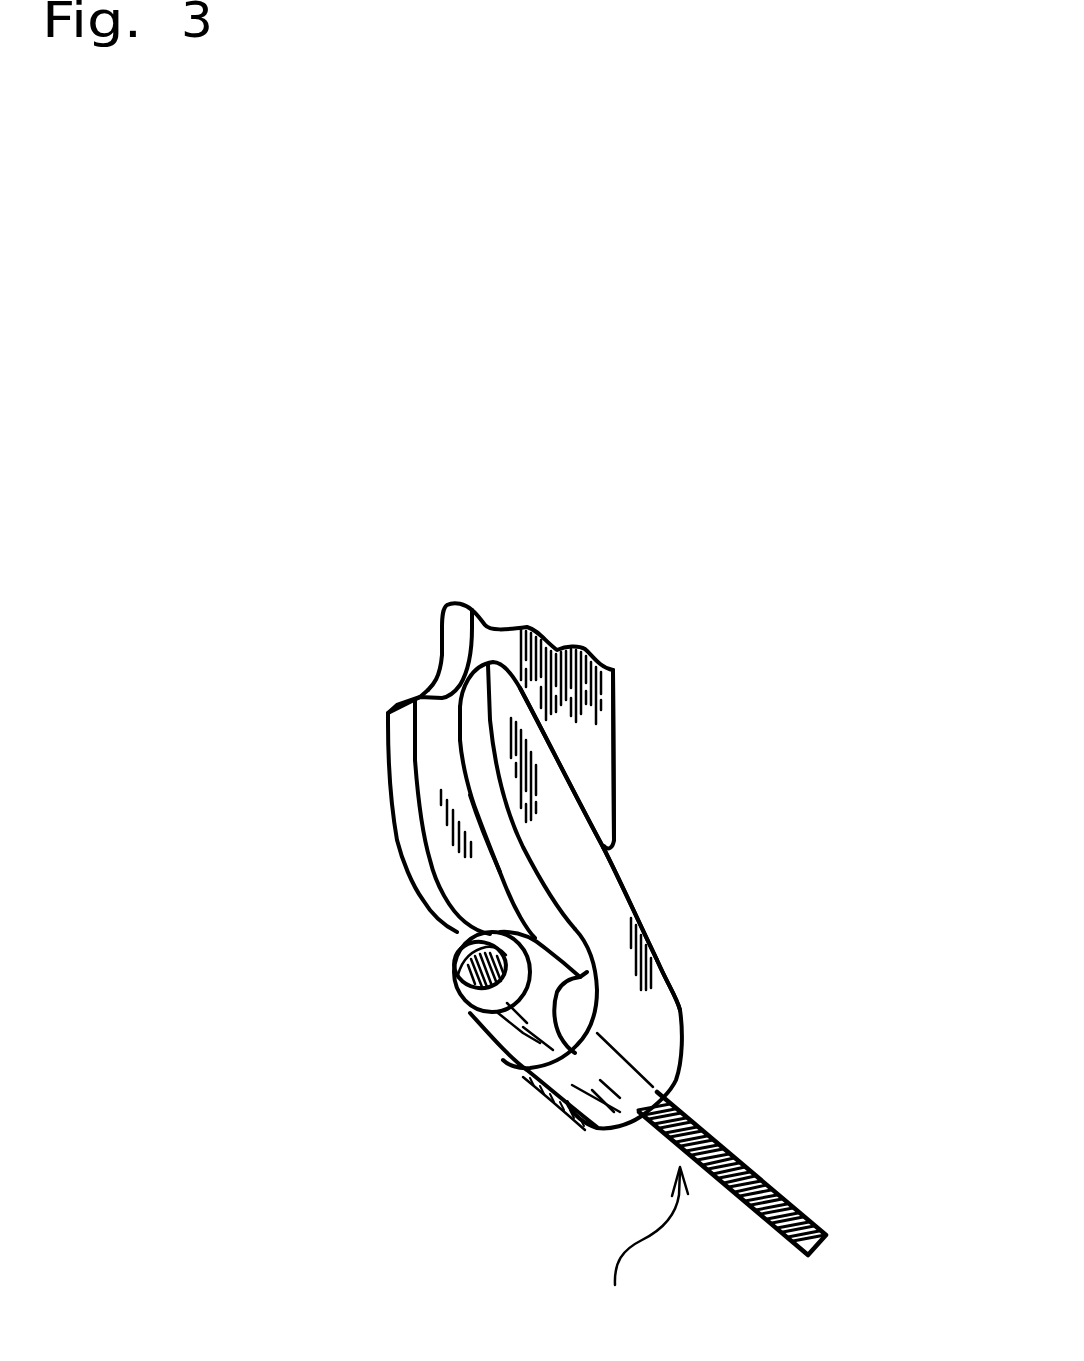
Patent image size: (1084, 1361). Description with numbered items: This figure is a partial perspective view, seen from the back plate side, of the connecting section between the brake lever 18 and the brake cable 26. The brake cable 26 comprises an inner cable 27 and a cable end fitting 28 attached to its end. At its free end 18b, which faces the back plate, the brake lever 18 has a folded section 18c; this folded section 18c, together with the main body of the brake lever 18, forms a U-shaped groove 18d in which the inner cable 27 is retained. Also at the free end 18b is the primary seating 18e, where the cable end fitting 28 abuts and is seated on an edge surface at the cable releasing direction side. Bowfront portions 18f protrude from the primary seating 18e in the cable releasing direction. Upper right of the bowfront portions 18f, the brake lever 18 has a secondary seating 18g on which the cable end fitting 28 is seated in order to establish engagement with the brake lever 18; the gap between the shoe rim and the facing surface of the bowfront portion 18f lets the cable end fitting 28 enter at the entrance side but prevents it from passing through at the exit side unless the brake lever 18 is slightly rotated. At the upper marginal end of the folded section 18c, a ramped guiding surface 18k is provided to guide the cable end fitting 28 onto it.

The brake lever 18 is at (615, 702).
The free end 18b is at (600, 777).
The ramped, guiding surface 18k is at (612, 829).
The U-shaped groove 18d is at (537, 931).
The folded section 18c is at (645, 990).
The secondary seating 18g is at (477, 720).
The bowfront portions 18f is at (533, 843).
The primary seating 18e is at (560, 1040).
The cable end fitting 28 is at (517, 1060).
The inner cable 27 is at (729, 1191).
The brake cable 26 is at (639, 1249).